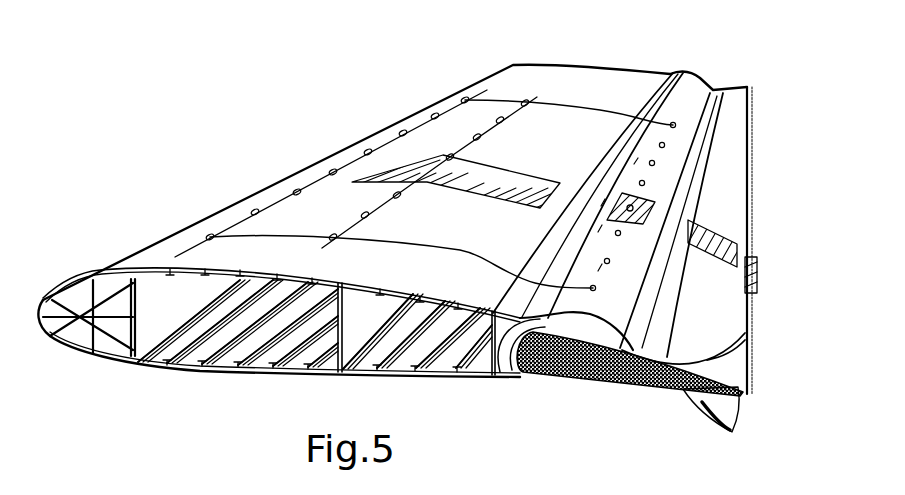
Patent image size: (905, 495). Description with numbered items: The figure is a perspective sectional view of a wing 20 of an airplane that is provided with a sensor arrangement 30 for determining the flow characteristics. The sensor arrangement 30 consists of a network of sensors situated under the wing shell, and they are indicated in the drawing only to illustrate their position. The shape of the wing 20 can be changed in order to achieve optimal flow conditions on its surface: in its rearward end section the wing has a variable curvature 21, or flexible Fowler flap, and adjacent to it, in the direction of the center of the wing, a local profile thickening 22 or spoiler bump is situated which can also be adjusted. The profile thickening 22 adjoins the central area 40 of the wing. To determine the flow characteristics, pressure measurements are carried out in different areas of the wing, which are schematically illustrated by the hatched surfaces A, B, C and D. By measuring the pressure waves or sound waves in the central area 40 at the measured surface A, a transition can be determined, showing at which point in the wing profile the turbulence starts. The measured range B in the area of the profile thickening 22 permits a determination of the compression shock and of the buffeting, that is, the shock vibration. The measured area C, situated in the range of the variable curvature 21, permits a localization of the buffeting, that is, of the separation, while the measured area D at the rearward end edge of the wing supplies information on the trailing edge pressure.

The wing 20 is at (209, 195).
The variable curvature 21 is at (677, 407).
The local profile thickening 22 is at (683, 93).
The sensor arrangement 30 is at (297, 190).
The central area 40 is at (581, 137).
The measured surface A is at (457, 183).
The measured range B is at (640, 220).
The measured area C is at (705, 252).
The measured area D is at (757, 287).